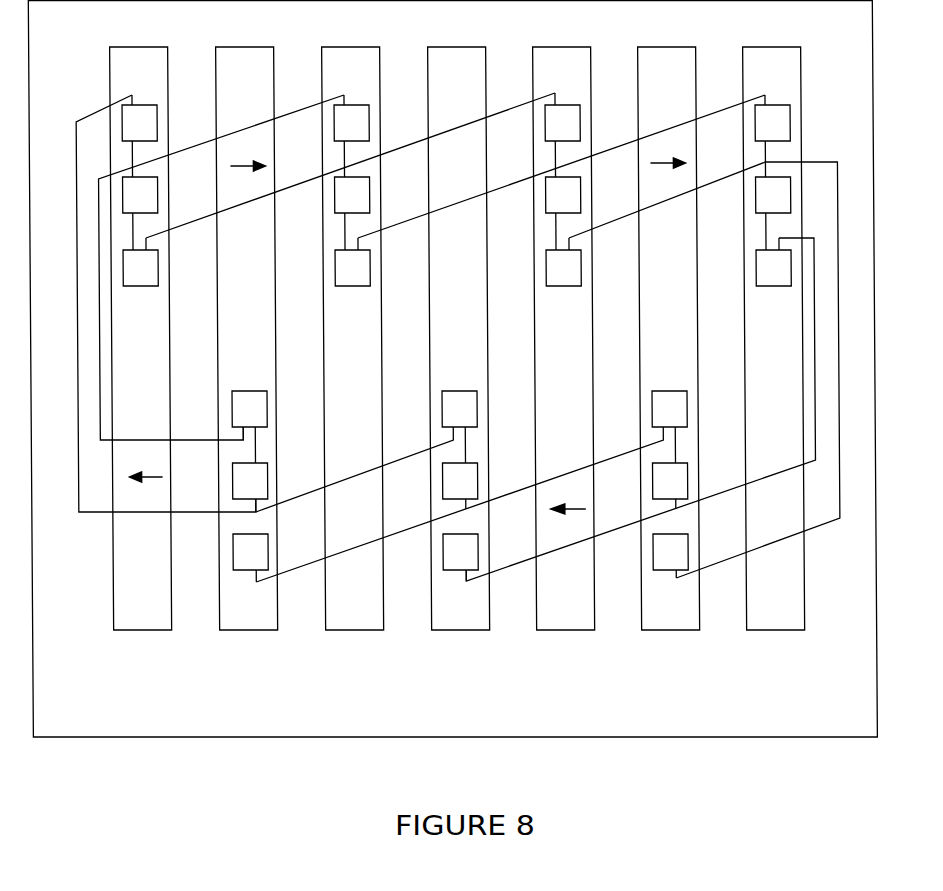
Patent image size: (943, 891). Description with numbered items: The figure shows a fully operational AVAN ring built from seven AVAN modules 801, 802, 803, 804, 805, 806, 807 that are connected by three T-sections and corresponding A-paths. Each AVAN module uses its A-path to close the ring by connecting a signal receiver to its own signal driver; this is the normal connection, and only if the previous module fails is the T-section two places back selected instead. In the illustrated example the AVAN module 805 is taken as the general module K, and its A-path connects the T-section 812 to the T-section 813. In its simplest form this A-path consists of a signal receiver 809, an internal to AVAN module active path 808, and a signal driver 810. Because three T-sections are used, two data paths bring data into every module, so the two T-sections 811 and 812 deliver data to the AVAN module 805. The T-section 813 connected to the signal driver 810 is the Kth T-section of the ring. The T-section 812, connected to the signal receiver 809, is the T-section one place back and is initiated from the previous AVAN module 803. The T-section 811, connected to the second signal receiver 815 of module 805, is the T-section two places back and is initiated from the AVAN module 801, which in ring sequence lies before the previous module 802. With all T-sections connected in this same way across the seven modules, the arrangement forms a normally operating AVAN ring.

The AVAN module 801 is at (140, 630).
The AVAN module 802 is at (246, 630).
The AVAN module 803 is at (352, 630).
The AVAN module 804 is at (458, 630).
The AVAN module 805 is at (565, 372).
The AVAN module 806 is at (668, 630).
The AVAN module 807 is at (773, 630).
The internal to AVAN module active path 808 is at (555, 231).
The signal receiver 809 is at (580, 193).
The signal driver 810 is at (580, 265).
The T-section 811 is at (510, 109).
The T-section 812 is at (510, 184).
The T-section 813 is at (721, 179).
The signal receiver 815 is at (580, 122).